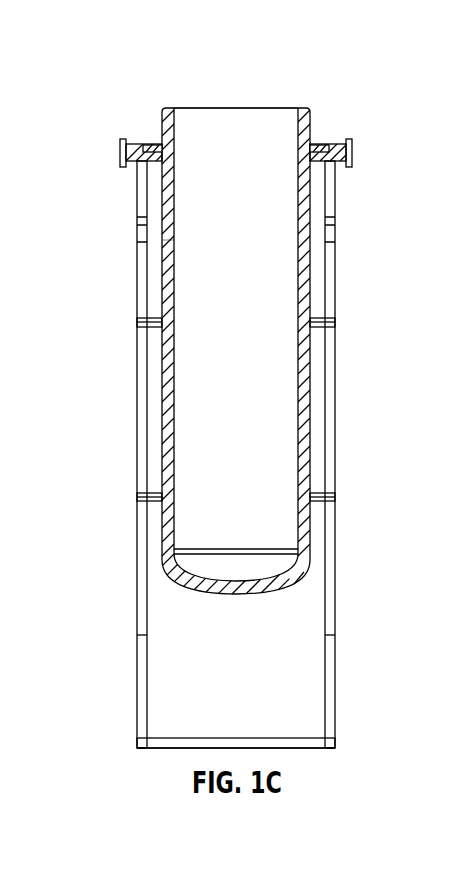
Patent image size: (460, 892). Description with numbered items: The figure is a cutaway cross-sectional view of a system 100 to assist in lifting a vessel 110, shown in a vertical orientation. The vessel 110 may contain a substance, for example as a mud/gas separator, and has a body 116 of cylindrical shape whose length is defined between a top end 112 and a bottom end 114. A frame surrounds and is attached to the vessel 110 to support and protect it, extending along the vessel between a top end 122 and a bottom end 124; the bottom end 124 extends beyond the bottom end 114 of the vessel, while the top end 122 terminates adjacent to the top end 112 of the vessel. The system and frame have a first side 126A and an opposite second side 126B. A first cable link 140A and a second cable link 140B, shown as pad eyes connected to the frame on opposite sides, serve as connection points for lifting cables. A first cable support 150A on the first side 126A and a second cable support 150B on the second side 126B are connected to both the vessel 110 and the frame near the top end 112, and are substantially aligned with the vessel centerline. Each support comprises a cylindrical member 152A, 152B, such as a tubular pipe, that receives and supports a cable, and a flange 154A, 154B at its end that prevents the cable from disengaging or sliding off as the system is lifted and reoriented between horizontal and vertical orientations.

The system 100 is at (361, 79).
The vessel 110 is at (292, 450).
The top end 112 is at (233, 109).
The bottom end 114 is at (192, 549).
The body 116 is at (171, 248).
The top end 122 is at (137, 198).
The bottom end 124 is at (337, 743).
The first side 126A is at (336, 678).
The second side 126B is at (136, 678).
The first cable link 140A is at (335, 236).
The second cable link 140B is at (137, 236).
The first cable support 150A is at (353, 146).
The second cable support 150B is at (119, 146).
The first cylindrical member 152A is at (335, 141).
The second cylindrical member 152B is at (135, 141).
The first flange 154A is at (352, 166).
The second flange 154B is at (121, 167).